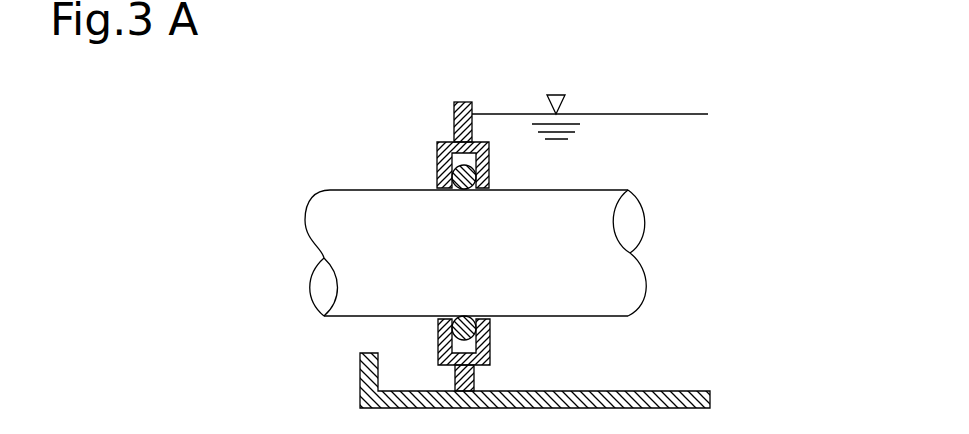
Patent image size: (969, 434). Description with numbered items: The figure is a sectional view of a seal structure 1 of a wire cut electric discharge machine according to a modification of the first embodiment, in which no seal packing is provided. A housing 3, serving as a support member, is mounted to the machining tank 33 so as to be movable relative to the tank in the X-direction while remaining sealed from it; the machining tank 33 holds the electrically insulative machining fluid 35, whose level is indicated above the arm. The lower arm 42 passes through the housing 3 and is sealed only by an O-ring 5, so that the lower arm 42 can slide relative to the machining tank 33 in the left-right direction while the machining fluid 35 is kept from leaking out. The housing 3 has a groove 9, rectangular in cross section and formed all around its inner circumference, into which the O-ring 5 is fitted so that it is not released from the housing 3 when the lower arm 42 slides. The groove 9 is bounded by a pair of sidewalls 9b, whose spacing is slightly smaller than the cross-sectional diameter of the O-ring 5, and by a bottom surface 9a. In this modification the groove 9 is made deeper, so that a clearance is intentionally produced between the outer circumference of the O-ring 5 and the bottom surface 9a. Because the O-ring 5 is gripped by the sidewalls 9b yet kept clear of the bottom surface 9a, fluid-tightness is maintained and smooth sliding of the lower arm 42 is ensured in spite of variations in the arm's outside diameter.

The seal structure 1 is at (393, 110).
The housing 3 is at (447, 143).
The machining tank 33 is at (462, 103).
The machining fluid 35 is at (620, 128).
The lower arm 42 is at (595, 200).
The O-ring 5 is at (463, 190).
The groove 9 is at (343, 132).
The bottom surface 9a is at (452, 162).
The sidewalls 9b is at (453, 172).